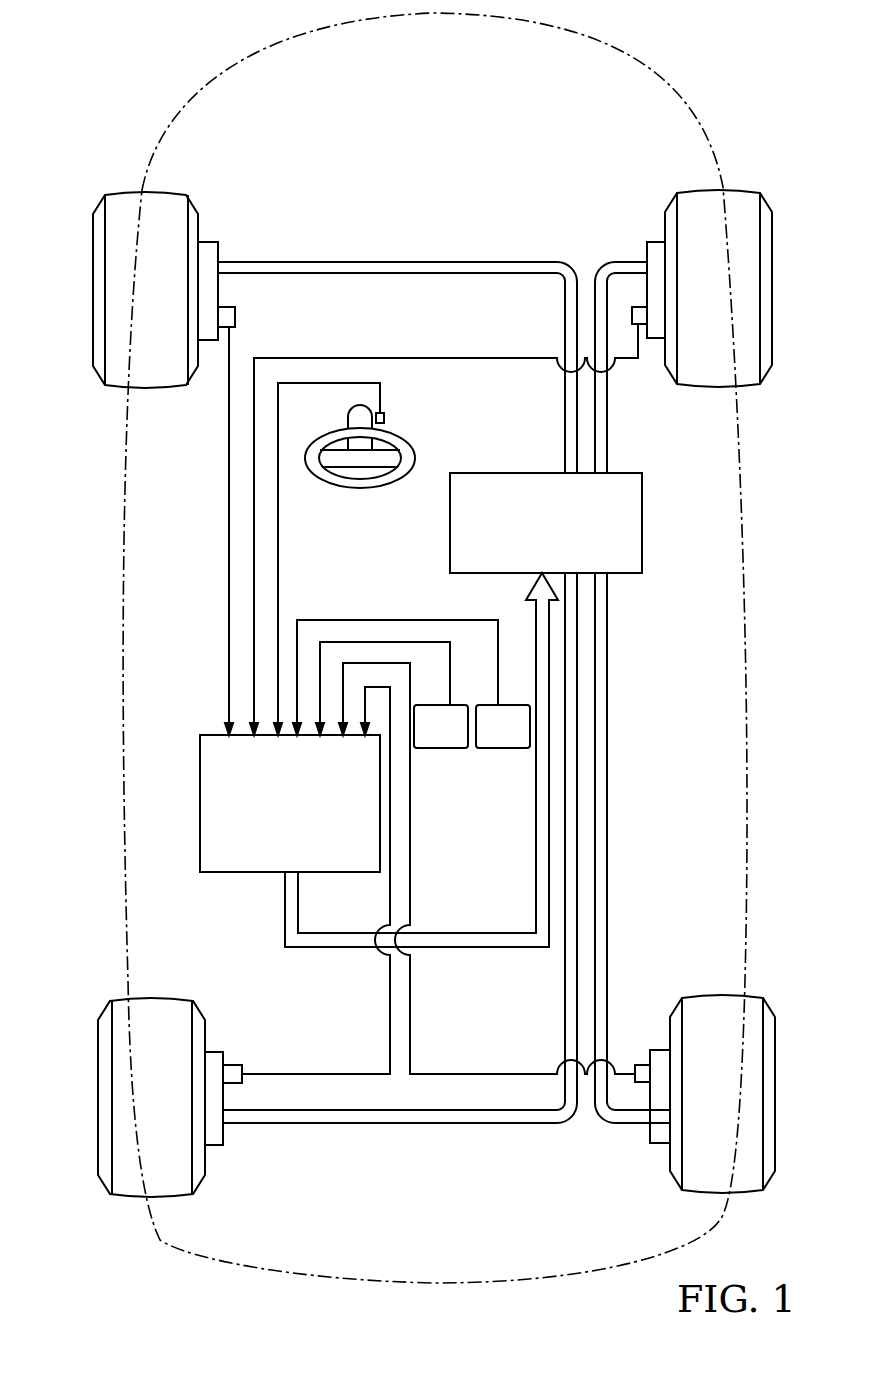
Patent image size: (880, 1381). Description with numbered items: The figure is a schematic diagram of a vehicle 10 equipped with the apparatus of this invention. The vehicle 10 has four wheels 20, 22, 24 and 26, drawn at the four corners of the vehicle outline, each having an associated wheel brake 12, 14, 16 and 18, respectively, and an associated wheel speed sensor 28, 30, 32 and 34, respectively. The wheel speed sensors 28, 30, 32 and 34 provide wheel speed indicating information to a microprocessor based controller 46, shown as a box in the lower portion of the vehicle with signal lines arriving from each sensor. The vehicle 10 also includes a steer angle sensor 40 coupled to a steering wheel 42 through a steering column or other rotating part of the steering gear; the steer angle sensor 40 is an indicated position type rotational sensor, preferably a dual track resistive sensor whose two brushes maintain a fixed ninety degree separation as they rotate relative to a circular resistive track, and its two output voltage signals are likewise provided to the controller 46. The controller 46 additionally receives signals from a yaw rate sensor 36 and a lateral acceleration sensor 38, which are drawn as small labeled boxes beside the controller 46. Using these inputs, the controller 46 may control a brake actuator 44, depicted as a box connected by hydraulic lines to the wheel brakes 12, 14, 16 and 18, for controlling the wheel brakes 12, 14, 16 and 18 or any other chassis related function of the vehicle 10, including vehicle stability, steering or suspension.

The vehicle 10 is at (622, 43).
The wheel brake 12 is at (210, 248).
The wheel brake 14 is at (654, 248).
The wheel brake 16 is at (215, 1135).
The wheel brake 18 is at (655, 1138).
The wheel 20 is at (118, 205).
The wheel 22 is at (740, 200).
The wheel 24 is at (118, 1018).
The wheel 26 is at (745, 1005).
The wheel speed sensor 28 is at (235, 316).
The wheel speed sensor 30 is at (637, 310).
The wheel speed sensor 32 is at (233, 1066).
The wheel speed sensor 34 is at (637, 1063).
The yaw rate sensor 36 is at (445, 748).
The lateral acceleration sensor 38 is at (502, 748).
The steer angle sensor 40 is at (386, 418).
The steering wheel 42 is at (358, 488).
The brake actuator 44 is at (636, 507).
The controller 46 is at (200, 745).